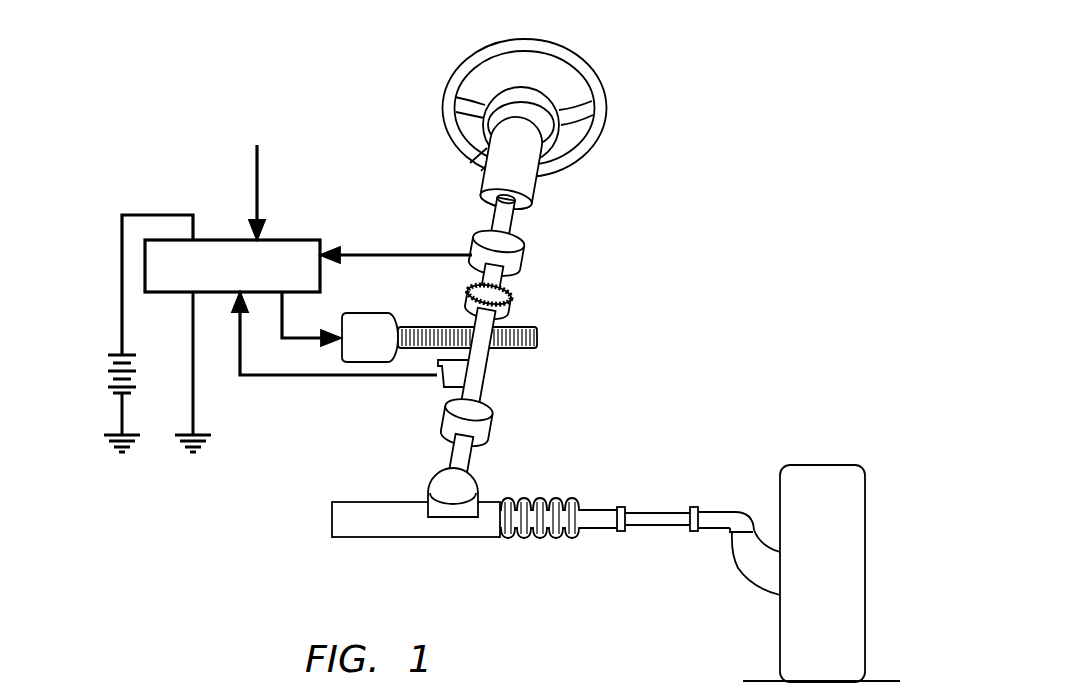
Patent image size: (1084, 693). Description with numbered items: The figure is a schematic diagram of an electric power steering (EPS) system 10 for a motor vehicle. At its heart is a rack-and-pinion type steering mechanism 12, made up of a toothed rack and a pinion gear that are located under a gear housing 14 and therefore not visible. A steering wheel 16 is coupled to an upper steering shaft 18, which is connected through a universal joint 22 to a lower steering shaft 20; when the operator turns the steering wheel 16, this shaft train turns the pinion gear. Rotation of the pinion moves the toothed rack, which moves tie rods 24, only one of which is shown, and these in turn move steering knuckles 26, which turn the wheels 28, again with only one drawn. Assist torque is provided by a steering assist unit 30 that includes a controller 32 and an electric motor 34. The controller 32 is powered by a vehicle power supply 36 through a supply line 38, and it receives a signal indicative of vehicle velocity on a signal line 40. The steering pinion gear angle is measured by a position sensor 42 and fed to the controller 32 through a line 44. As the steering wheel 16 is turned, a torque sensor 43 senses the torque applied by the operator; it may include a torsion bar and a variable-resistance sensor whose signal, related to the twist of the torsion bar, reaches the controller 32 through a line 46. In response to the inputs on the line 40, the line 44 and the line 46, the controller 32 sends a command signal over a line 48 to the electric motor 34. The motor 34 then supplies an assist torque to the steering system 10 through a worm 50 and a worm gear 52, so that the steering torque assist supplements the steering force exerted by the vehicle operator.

The electric power steering system 10 is at (667, 222).
The rack-and-pinion type steering mechanism 12 is at (505, 565).
The gear housing 14 is at (473, 490).
The steering wheel 16 is at (603, 97).
The upper steering shaft 18 is at (507, 220).
The lower steering shaft 20 is at (497, 368).
The universal joint 22 is at (487, 420).
The tie rod 24 is at (663, 528).
The steering knuckle 26 is at (735, 567).
The wheel 28 is at (855, 578).
The steering assist unit 30 is at (302, 169).
The controller 32 is at (305, 240).
The electric motor 34 is at (385, 322).
The vehicle power supply 36 is at (118, 353).
The supply line 38 is at (145, 215).
The signal line 40 is at (256, 178).
The position sensor 42 is at (445, 378).
The torque sensor 43 is at (520, 258).
The line 44 is at (330, 380).
The line 46 is at (362, 252).
The line 48 is at (300, 306).
The worm 50 is at (540, 340).
The worm gear 52 is at (520, 303).